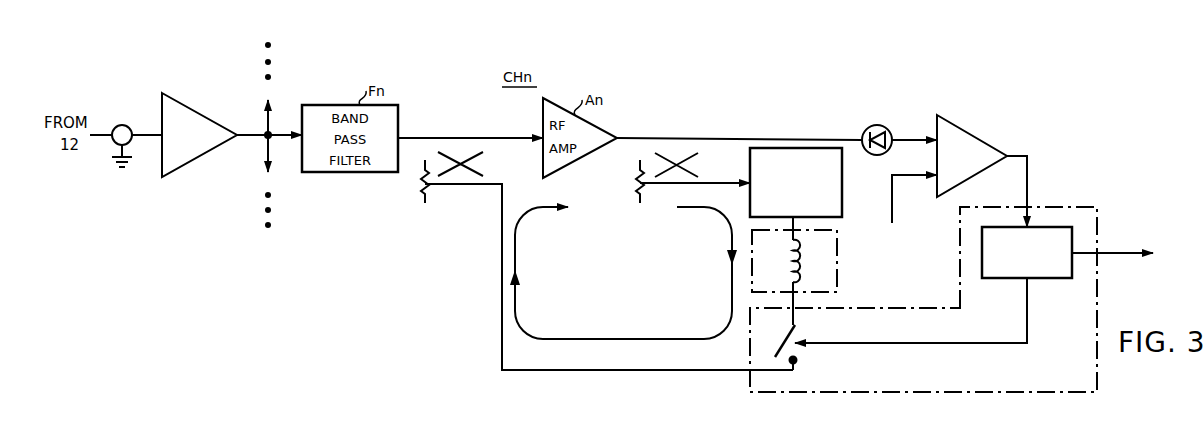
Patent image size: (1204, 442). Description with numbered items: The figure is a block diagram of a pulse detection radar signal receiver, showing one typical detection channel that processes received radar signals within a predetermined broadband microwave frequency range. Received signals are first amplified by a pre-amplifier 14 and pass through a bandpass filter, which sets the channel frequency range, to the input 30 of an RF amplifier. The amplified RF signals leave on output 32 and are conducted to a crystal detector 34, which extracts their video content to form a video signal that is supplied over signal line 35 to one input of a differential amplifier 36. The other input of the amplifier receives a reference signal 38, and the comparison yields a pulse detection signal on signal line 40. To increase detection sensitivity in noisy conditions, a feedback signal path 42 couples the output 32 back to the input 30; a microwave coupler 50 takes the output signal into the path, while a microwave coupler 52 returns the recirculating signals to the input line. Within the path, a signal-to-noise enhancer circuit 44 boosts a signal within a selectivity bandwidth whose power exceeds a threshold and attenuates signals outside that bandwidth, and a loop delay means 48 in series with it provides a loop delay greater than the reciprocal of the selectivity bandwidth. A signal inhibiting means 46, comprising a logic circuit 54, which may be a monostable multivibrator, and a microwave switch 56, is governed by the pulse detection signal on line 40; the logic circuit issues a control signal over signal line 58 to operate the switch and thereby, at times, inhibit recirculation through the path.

The pre-amplifier 14 is at (195, 111).
The input of the RF amplifier 30 is at (513, 138).
The output of the RF amplifier 32 is at (654, 138).
The crystal detector 34 is at (863, 130).
The signal line 35 is at (911, 136).
The differential amplifier 36 is at (965, 131).
The reference signal 38 is at (890, 186).
The signal line 40 is at (1027, 156).
The feedback signal path 42 is at (732, 278).
The signal-to-noise enhancer circuit 44 is at (750, 167).
The signal inhibiting means 46 is at (1086, 207).
The loop delay means 48 is at (837, 286).
The microwave coupler 50 is at (672, 186).
The microwave coupler 52 is at (456, 185).
The logic circuit 54 is at (995, 279).
The microwave switch 56 is at (800, 333).
The signal line 58 is at (1027, 328).